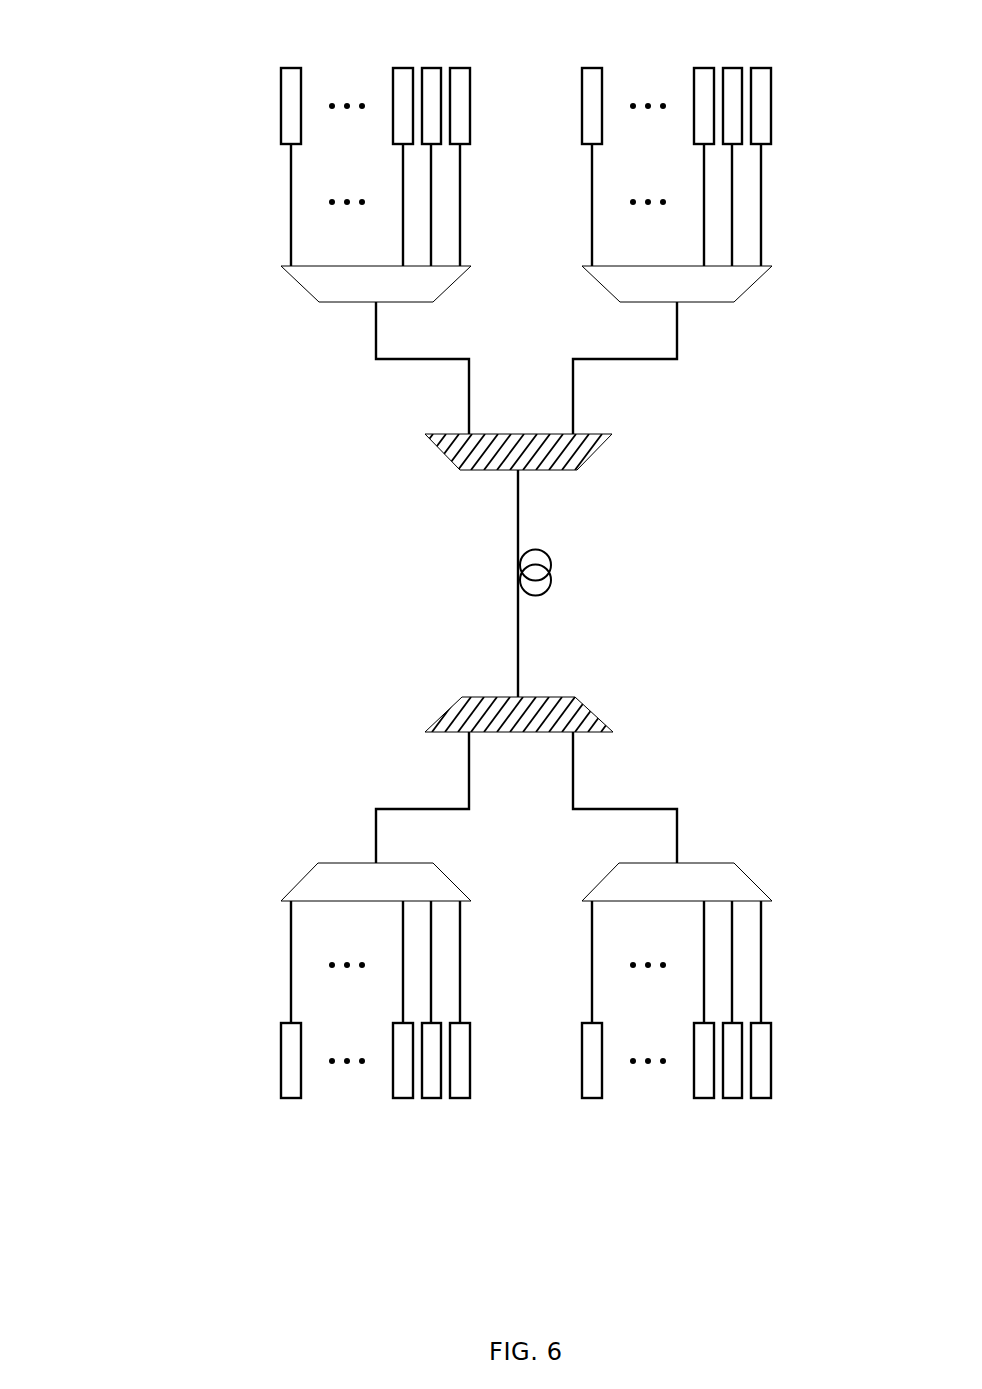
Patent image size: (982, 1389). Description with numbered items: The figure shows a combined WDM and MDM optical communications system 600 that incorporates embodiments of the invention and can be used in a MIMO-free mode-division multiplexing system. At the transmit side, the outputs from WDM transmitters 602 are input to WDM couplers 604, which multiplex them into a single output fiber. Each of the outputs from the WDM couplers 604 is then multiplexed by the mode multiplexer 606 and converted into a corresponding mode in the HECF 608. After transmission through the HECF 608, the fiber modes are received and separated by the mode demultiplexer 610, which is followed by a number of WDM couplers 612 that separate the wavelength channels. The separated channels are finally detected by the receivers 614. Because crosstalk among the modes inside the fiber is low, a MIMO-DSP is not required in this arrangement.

The optical communication system 600 is at (58, 34).
The WDM transmitters 602 is at (770, 118).
The WDM couplers 604 is at (770, 283).
The mode multiplexer 606 is at (605, 452).
The HECF 608 is at (560, 575).
The mode demultiplexer 610 is at (600, 715).
The WDM couplers 612 is at (770, 883).
The receivers 614 is at (780, 1070).